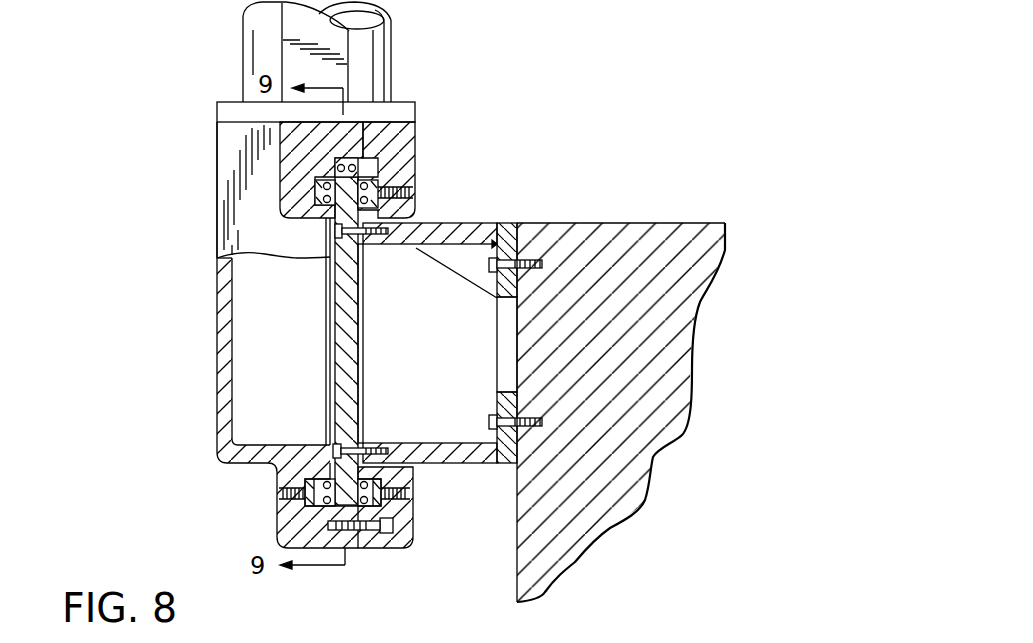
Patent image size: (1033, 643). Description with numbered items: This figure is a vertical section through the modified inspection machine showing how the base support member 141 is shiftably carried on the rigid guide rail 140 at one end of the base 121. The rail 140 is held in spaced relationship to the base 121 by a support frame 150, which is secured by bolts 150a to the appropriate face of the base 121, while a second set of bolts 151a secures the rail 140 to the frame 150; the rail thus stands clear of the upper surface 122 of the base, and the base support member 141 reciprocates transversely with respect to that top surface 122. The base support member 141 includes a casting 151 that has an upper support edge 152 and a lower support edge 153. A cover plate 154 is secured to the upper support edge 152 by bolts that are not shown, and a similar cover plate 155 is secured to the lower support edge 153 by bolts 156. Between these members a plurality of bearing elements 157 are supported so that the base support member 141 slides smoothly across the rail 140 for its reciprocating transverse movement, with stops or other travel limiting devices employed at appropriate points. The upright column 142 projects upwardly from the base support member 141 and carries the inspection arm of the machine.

The base 121 is at (513, 562).
The upper surface 122 is at (642, 223).
The rigid guide rail 140 is at (353, 319).
The base support member 141 is at (213, 370).
The upright column 142 is at (392, 63).
The support frame 150 is at (485, 232).
The bolts 150a is at (497, 267).
The casting 151 is at (222, 418).
The bolts 151a is at (367, 245).
The upper support edge 152 is at (302, 153).
The lower support edge 153 is at (290, 522).
The cover plate 154 is at (403, 148).
The cover plate 155 is at (398, 508).
The bolts 156 is at (382, 535).
The bearing elements 157 is at (378, 182).